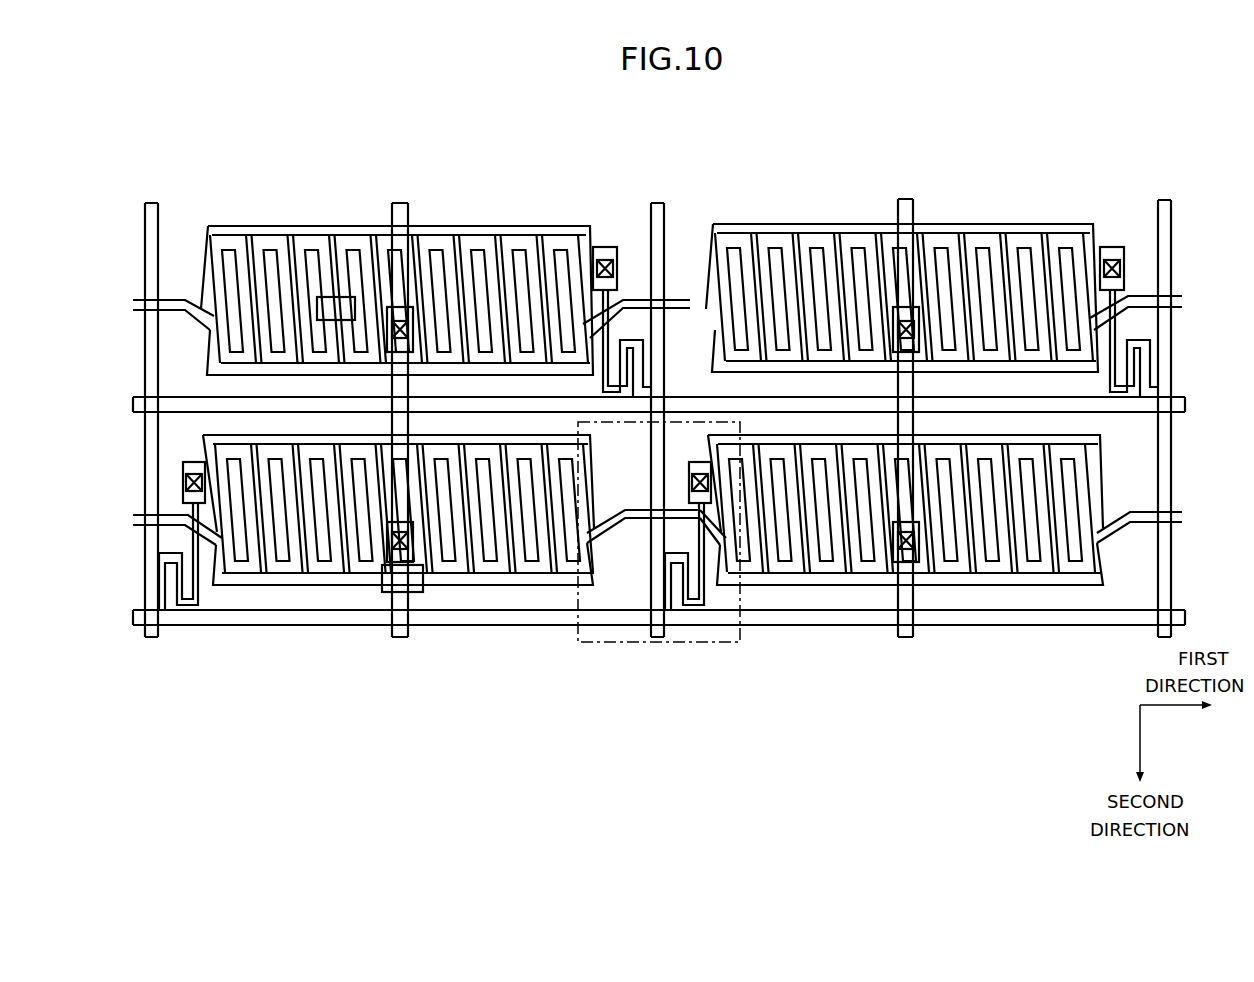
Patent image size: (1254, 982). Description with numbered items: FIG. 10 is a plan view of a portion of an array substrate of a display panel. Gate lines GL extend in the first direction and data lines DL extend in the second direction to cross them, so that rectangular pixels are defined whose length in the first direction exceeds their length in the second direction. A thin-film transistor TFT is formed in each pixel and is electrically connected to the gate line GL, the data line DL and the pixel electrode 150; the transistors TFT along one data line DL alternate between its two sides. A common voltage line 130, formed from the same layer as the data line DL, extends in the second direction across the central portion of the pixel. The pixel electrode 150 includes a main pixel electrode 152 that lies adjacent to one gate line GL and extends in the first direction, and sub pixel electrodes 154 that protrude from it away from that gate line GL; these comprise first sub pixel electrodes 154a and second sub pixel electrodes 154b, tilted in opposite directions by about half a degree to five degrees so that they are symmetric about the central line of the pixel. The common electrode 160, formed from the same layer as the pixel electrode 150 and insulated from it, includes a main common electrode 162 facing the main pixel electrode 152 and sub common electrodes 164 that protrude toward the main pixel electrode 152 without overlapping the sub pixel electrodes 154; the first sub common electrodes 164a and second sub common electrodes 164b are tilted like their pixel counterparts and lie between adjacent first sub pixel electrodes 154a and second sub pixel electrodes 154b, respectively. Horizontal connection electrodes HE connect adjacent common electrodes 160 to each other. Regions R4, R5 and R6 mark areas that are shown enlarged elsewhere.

The common voltage line 130 is at (400, 203).
The pixel electrode 150 is at (483, 227).
The main pixel electrode 152 is at (902, 242).
The sub pixel electrode 154 is at (904, 236).
The first sub pixel electrode 154a is at (875, 270).
The second sub pixel electrode 154b is at (935, 270).
The common electrode 160 is at (503, 586).
The main common electrode 162 is at (905, 575).
The sub common electrode 164 is at (906, 579).
The first sub common electrode 164a is at (848, 548).
The second sub common electrode 164b is at (963, 548).
The horizontal connection electrode HE is at (625, 300).
The data line DL is at (145, 548).
The gate line GL is at (258, 625).
The thin-film transistor TFT is at (173, 608).
The region R4 is at (605, 642).
The region R5 is at (377, 592).
The region R6 is at (331, 297).